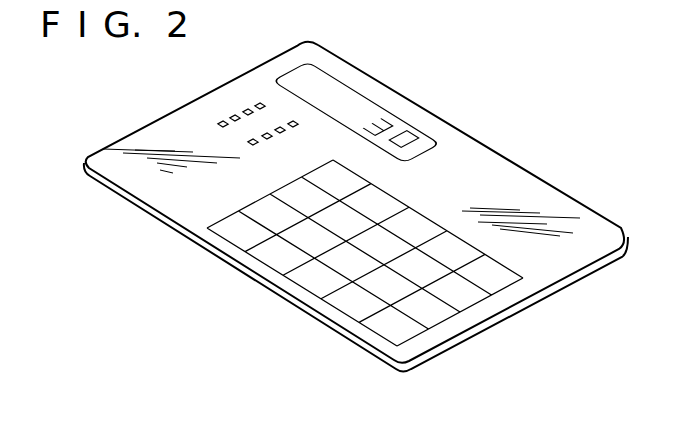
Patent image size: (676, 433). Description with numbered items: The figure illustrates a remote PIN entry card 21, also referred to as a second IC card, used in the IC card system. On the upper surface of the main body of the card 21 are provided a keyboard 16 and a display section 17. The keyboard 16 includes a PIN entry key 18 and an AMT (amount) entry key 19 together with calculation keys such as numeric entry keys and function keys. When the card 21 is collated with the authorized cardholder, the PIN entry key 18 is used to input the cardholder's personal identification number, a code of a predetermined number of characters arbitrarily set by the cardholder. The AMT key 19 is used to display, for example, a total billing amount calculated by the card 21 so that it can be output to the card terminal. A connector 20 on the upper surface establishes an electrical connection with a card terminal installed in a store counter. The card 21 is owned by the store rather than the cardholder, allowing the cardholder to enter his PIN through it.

The keyboard 16 is at (290, 284).
The display section 17 is at (377, 116).
The PIN entry key 18 is at (365, 251).
The AMT entry key 19 is at (278, 193).
The connector 20 is at (226, 116).
The remote PIN entry card 21 is at (368, 85).